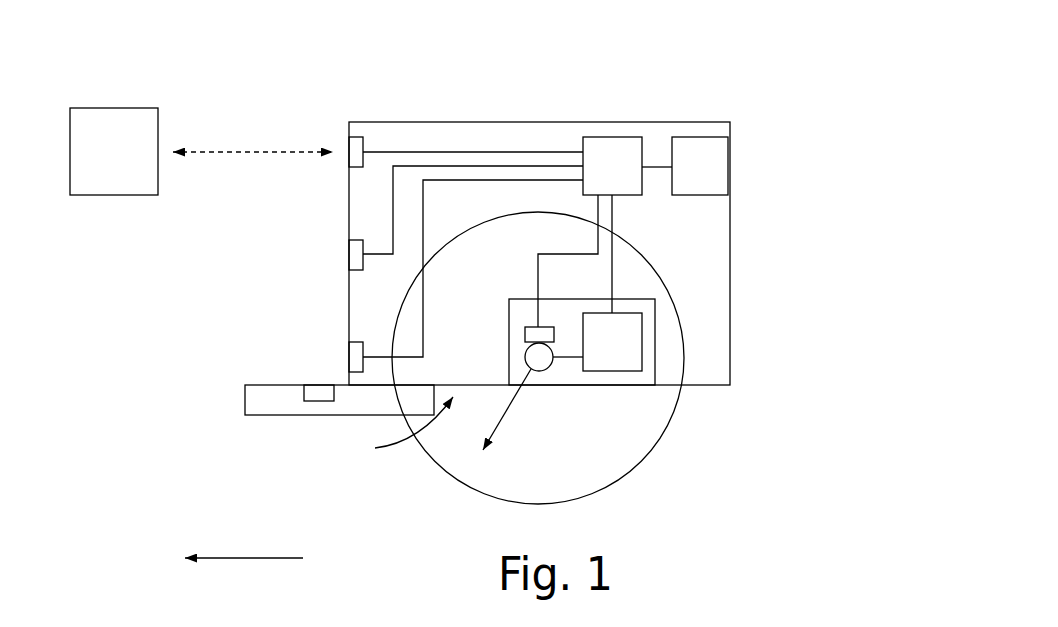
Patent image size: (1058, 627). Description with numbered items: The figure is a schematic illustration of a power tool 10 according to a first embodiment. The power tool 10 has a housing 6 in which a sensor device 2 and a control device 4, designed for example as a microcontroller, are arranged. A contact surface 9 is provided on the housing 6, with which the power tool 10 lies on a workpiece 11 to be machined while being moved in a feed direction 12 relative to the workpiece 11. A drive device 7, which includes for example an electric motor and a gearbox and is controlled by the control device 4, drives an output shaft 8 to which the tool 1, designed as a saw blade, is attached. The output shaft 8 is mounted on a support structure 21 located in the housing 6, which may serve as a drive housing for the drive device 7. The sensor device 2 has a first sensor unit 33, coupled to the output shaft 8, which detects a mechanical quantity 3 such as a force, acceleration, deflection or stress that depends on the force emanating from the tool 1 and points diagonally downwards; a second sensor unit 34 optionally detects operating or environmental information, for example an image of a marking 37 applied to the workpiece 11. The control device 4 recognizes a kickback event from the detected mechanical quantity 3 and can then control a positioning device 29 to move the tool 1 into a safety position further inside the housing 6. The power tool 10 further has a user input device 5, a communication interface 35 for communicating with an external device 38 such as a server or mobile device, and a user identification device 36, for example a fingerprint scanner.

The tool 1 is at (440, 442).
The sensor device 2 is at (440, 276).
The mechanical quantity 3 is at (505, 410).
The control device 4 is at (623, 147).
The user input device 5 is at (722, 178).
The housing 6 is at (722, 317).
The drive device 7 is at (660, 324).
The output shaft 8 is at (525, 357).
The contact surface 9 is at (406, 432).
The power tool 10 is at (579, 252).
The workpiece 11 is at (290, 398).
The feed direction 12 is at (245, 558).
The support structure 21 is at (655, 352).
The positioning device 29 is at (627, 366).
The first sensor unit 33 is at (527, 333).
The second sensor unit 34 is at (350, 360).
The communication interface 35 is at (355, 148).
The user identification device 36 is at (353, 259).
The marking 37 is at (315, 402).
The external device 38 is at (130, 118).